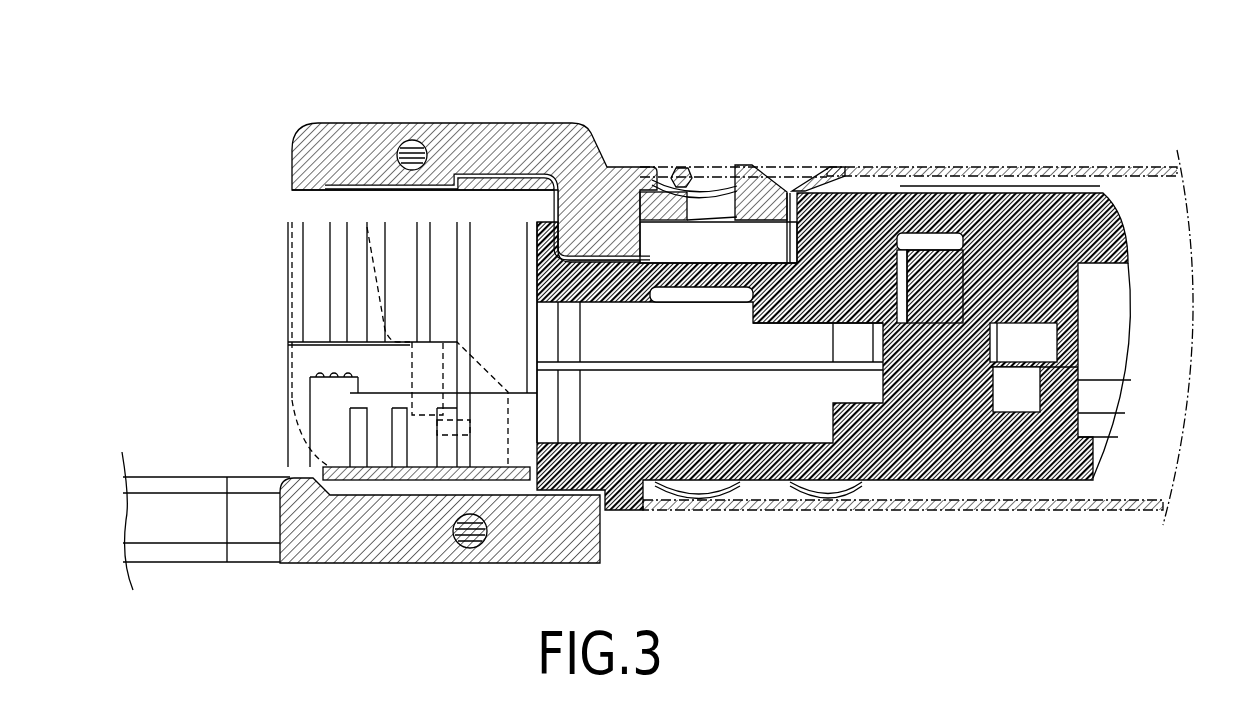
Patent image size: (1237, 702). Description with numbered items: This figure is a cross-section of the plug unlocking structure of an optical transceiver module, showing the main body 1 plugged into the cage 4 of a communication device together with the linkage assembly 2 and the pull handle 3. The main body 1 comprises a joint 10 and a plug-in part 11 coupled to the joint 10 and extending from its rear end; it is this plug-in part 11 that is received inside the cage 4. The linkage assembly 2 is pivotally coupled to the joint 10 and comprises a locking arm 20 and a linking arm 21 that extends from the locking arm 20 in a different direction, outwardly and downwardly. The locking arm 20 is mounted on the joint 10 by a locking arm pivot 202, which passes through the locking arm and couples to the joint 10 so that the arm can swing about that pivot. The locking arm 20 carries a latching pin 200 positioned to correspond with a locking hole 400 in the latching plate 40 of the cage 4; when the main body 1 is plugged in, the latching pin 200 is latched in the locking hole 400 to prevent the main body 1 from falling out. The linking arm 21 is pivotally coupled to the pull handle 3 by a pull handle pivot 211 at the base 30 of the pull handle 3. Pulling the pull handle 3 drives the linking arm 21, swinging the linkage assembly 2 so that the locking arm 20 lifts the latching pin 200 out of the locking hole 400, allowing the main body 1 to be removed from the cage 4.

The main body 1 is at (834, 334).
The joint 10 is at (570, 480).
The plug-in part 11 is at (993, 473).
The linkage assembly 2 is at (406, 327).
The locking arm 20 is at (482, 122).
The locking arm pivot 202 is at (412, 140).
The linking arm 21 is at (290, 303).
The pull handle pivot 211 is at (462, 548).
The pull handle 3 is at (176, 470).
The base 30 is at (353, 553).
The cage 4 is at (916, 302).
The latching plate 40 is at (678, 165).
The latching pin 200 is at (745, 162).
The locking hole 400 is at (788, 178).